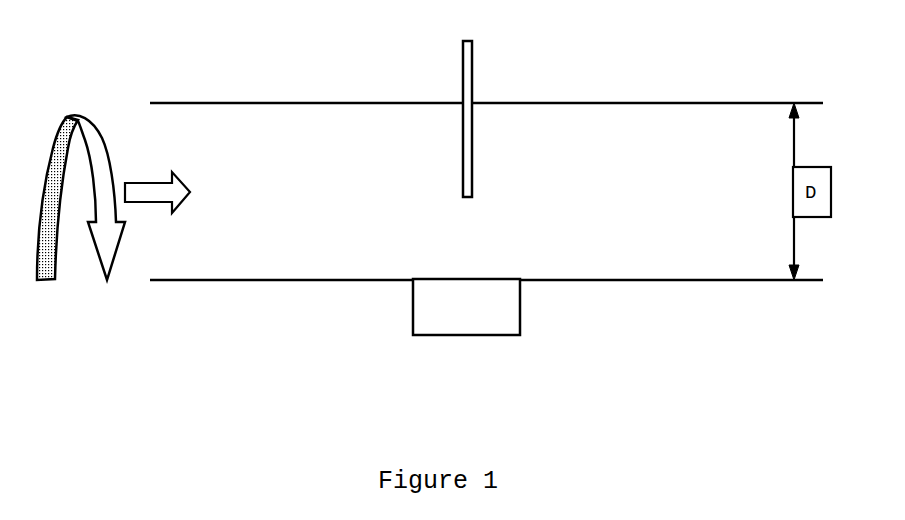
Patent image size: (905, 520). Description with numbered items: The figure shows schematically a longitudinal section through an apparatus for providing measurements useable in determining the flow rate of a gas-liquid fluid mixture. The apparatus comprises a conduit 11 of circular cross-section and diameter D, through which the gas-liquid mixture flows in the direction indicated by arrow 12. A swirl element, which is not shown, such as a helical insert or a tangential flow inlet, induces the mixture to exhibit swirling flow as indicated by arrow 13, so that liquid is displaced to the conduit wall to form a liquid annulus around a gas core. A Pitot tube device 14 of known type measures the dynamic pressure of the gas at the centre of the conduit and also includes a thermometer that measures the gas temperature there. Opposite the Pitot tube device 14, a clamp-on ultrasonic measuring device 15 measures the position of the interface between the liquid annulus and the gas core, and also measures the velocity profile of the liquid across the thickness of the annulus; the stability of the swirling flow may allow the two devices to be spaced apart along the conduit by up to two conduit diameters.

The conduit 11 is at (238, 103).
The arrow 12 is at (148, 181).
The arrow 13 is at (48, 280).
The Pitot tube device 14 is at (470, 87).
The clamp-on ultrasonic measuring device 15 is at (520, 305).